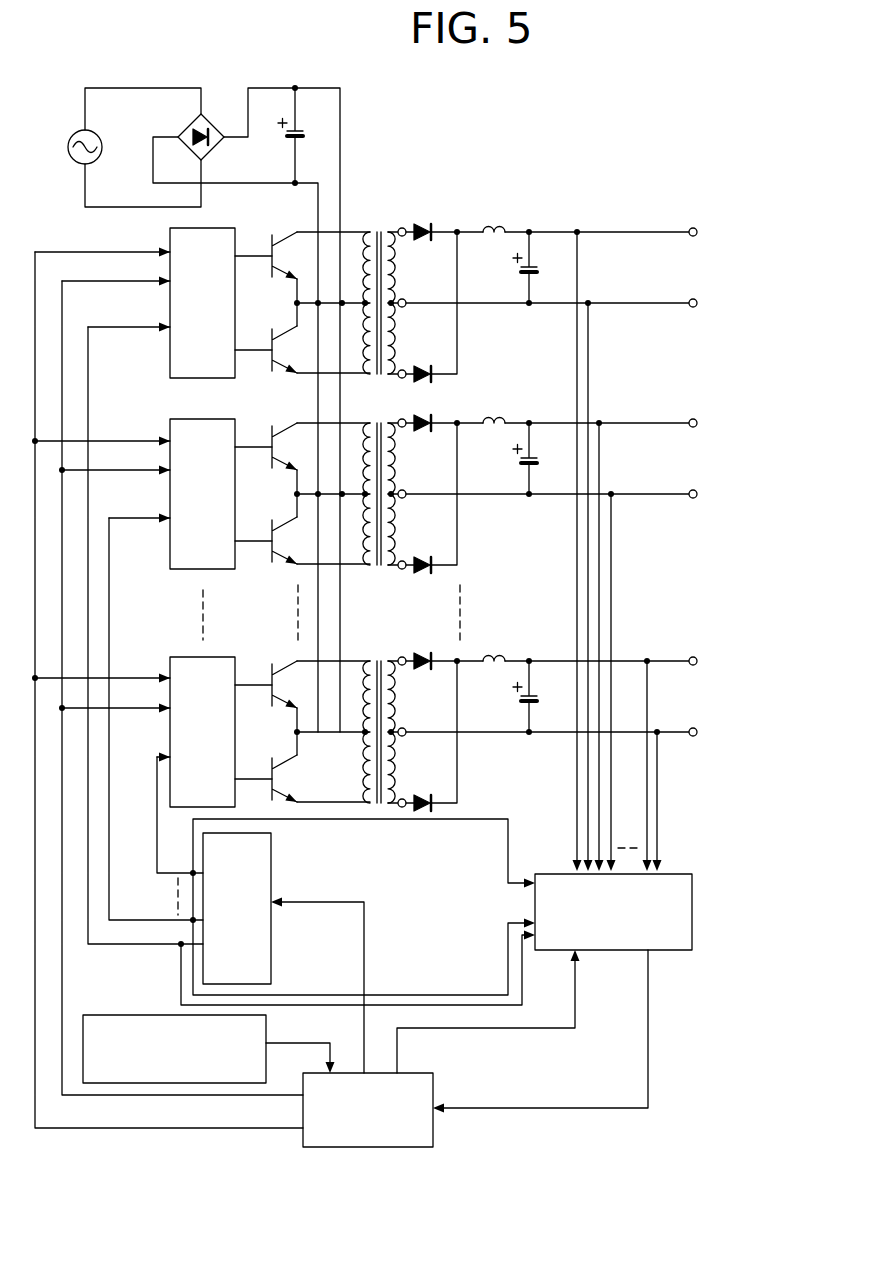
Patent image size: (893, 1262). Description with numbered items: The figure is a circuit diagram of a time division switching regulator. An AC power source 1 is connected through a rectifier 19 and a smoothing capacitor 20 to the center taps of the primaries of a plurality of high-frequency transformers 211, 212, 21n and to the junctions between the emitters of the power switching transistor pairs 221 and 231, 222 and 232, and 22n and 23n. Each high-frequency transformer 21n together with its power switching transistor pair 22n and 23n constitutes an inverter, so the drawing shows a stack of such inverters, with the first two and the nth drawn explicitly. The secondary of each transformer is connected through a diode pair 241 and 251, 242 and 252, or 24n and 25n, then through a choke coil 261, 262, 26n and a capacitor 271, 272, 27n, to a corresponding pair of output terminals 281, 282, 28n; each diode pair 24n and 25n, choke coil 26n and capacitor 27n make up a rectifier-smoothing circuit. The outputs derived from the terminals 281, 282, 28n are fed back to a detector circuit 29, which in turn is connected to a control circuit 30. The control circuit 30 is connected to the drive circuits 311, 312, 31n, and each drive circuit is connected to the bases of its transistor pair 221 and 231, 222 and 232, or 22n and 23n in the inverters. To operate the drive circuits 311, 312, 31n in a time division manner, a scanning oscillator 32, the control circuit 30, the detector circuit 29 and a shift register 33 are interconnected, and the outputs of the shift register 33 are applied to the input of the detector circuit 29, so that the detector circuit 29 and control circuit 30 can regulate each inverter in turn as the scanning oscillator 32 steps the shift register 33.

The AC power source 1 is at (68, 147).
The rectifier 19 is at (188, 126).
The smoothing capacitor 20 is at (282, 142).
The high-frequency transformer 211 is at (378, 230).
The high-frequency transformer 212 is at (372, 473).
The high-frequency transformer 21n is at (374, 697).
The power switching transistor 221 is at (274, 240).
The power switching transistor 222 is at (302, 449).
The power switching transistor 22n is at (302, 685).
The power switching transistor 231 is at (274, 330).
The power switching transistor 232 is at (302, 520).
The power switching transistor 23n is at (302, 759).
The diode 241 is at (424, 226).
The diode 242 is at (444, 453).
The diode 24n is at (439, 630).
The diode 251 is at (424, 365).
The diode 252 is at (431, 498).
The diode 25n is at (431, 736).
The choke coil 261 is at (493, 226).
The choke coil 262 is at (504, 393).
The choke coil 26n is at (503, 628).
The capacitor 271 is at (518, 274).
The capacitor 272 is at (471, 458).
The capacitor 27n is at (471, 696).
The output terminal 281 is at (693, 227).
The output terminal 282 is at (647, 457).
The output terminal 28n is at (647, 695).
The detector circuit 29 is at (692, 905).
The control circuit 30 is at (352, 1148).
The drive circuit 311 is at (170, 352).
The drive circuit 312 is at (175, 495).
The drive circuit 31n is at (173, 732).
The scanning oscillator 32 is at (135, 1015).
The shift register 33 is at (271, 865).